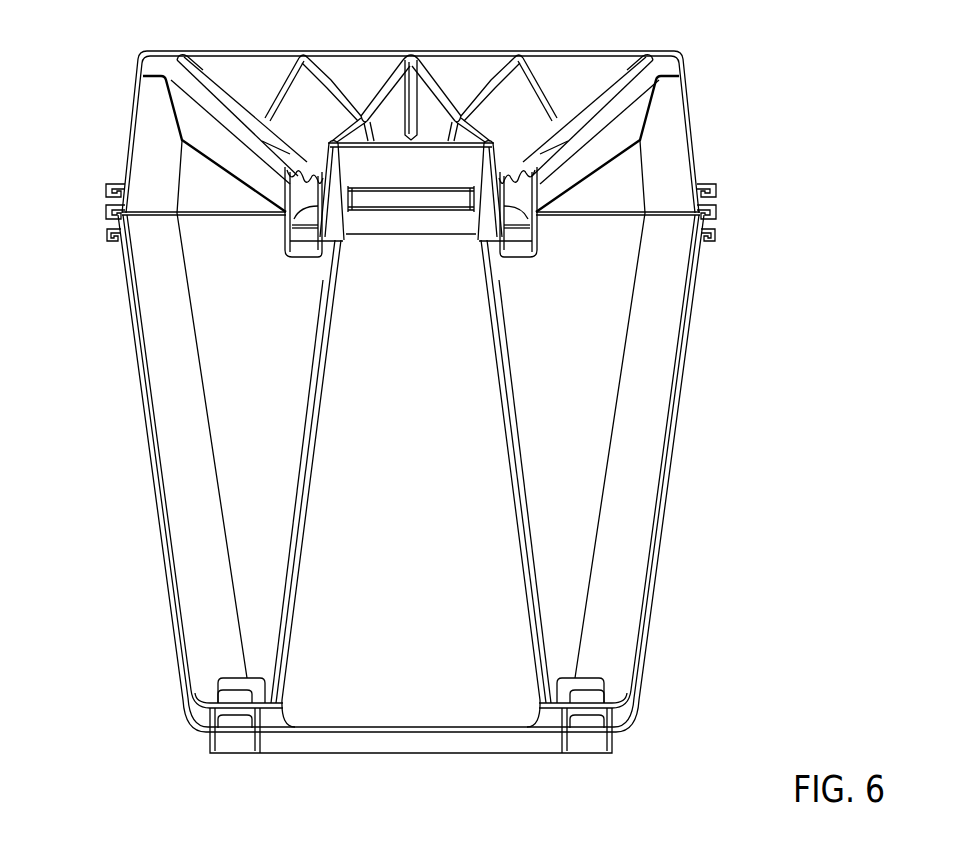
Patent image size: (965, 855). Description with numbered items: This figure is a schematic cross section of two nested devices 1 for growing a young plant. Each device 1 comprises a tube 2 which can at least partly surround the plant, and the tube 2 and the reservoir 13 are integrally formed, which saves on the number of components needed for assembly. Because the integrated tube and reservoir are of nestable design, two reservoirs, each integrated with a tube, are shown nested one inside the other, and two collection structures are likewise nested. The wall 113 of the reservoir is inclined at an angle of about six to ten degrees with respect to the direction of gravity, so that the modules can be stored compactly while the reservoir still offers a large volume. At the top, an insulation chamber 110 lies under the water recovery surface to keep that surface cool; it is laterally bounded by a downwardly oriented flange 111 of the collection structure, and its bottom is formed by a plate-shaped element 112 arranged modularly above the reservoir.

The device 1 is at (505, 402).
The tube 2 is at (412, 427).
The reservoir 13 is at (587, 367).
The insulation chamber 110 is at (600, 186).
The downwardly oriented flange 111 is at (692, 112).
The plate-shaped element 112 is at (611, 215).
The wall 113 is at (675, 460).